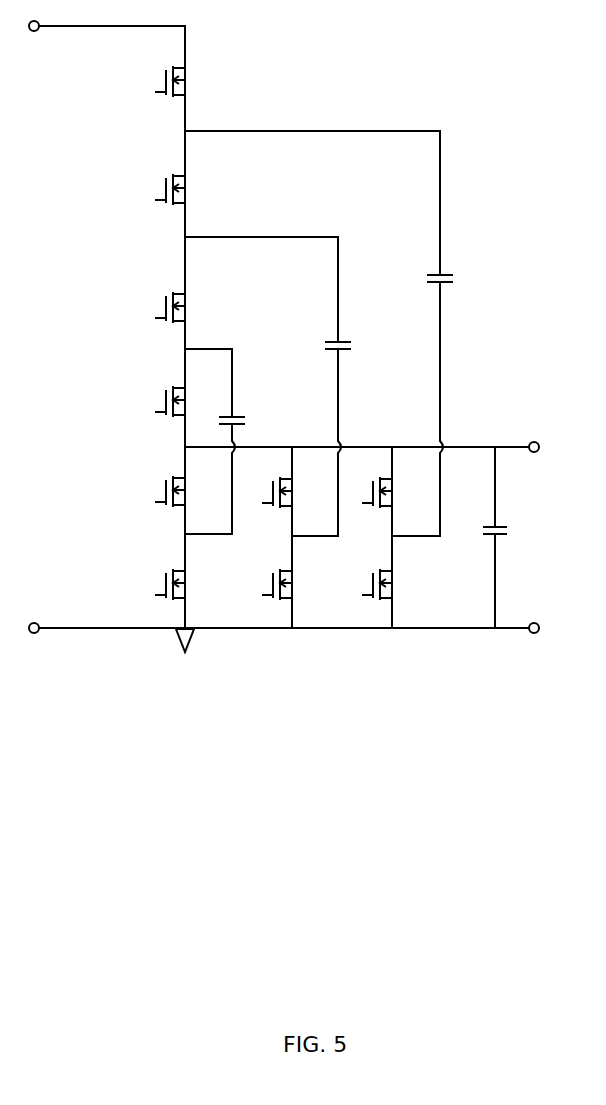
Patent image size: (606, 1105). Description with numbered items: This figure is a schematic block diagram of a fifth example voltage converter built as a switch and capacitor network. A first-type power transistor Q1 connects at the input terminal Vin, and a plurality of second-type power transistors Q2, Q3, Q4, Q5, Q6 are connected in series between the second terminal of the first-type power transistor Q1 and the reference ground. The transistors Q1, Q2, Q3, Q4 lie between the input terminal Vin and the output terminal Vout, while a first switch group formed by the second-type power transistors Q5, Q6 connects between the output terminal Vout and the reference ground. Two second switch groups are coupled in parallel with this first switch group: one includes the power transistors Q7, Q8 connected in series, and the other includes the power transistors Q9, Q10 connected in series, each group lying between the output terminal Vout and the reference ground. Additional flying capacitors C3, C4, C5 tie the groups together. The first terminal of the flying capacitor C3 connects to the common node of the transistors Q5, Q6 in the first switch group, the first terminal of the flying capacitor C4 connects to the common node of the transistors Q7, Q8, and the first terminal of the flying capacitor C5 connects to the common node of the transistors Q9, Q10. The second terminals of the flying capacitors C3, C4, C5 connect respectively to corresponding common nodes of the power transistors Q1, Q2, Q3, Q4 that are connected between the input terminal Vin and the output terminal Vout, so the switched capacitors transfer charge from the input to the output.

The first-type power transistor Q1 is at (152, 81).
The second-type power transistor Q2 is at (152, 189).
The second-type power transistor Q3 is at (152, 307).
The second-type power transistor Q4 is at (152, 401).
The second-type power transistor Q5 is at (152, 491).
The second-type power transistor Q6 is at (152, 584).
The power transistor Q7 is at (297, 492).
The power transistor Q8 is at (297, 584).
The power transistor Q9 is at (395, 492).
The power transistor Q10 is at (401, 584).
The flying capacitor C3 is at (234, 441).
The flying capacitor C4 is at (284, 386).
The flying capacitor C5 is at (339, 333).
The input terminal Vin is at (44, 327).
The output terminal Vout is at (523, 537).